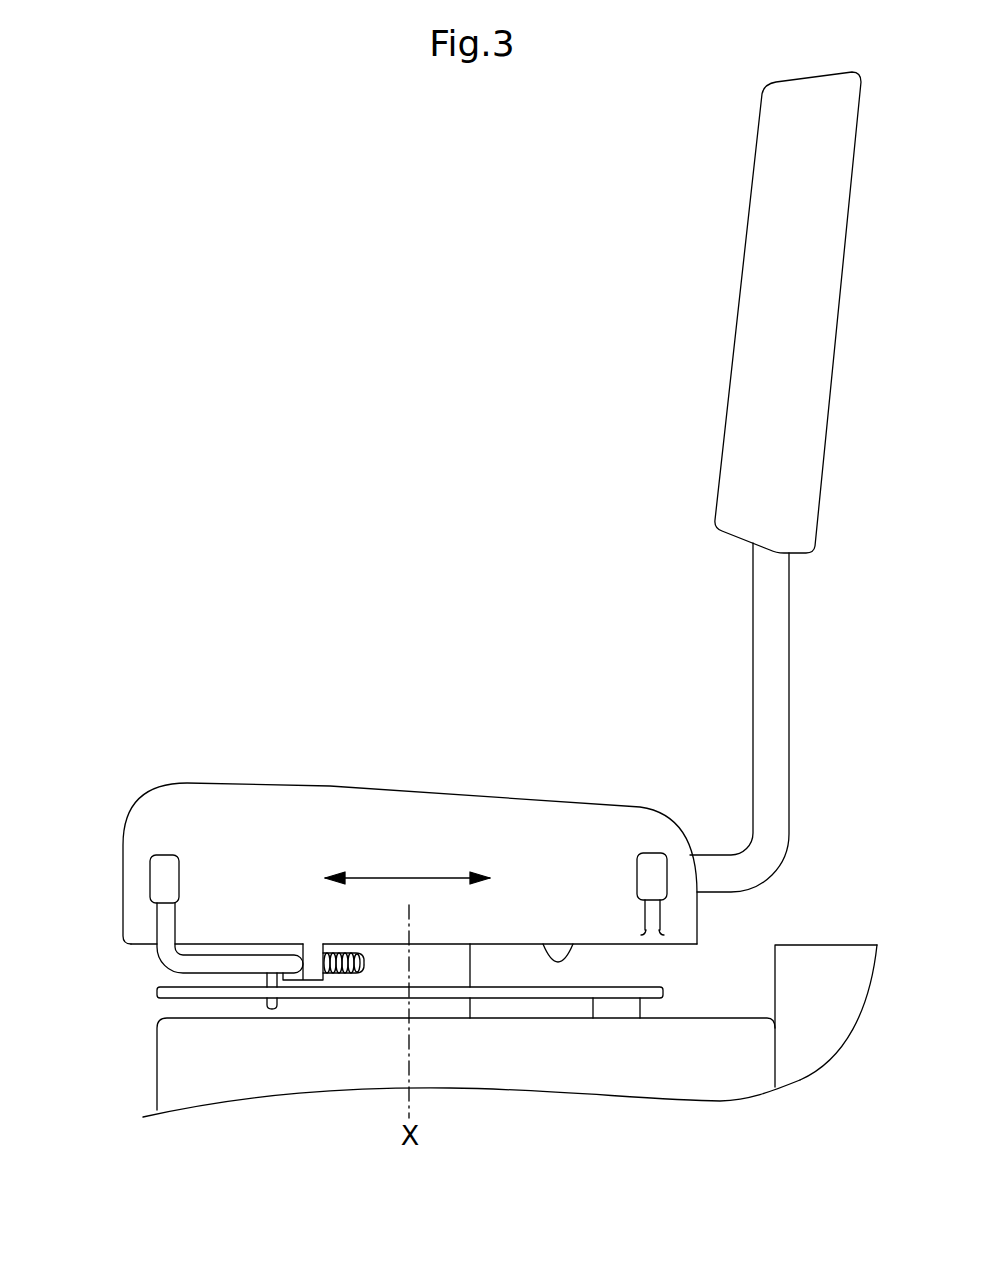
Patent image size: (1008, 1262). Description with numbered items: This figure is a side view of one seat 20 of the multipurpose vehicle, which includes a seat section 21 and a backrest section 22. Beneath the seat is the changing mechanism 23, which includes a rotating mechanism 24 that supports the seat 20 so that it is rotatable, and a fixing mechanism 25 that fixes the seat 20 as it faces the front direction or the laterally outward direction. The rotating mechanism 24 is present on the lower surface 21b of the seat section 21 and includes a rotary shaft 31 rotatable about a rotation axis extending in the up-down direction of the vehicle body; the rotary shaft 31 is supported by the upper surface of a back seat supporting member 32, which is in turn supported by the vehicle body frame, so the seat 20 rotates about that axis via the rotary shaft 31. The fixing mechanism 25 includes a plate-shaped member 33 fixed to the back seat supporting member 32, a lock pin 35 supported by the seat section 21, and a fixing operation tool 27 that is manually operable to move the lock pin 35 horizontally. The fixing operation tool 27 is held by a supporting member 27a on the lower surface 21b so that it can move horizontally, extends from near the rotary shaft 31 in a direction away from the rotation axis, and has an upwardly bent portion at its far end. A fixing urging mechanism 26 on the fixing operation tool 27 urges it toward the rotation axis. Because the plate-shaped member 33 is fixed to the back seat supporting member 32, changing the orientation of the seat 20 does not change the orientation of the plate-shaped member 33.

The seat 20 is at (492, 529).
The seat section 21 is at (363, 797).
The lower surface 21b is at (565, 952).
The backrest section 22 is at (730, 438).
The changing mechanism 23 is at (105, 1040).
The rotating mechanism 24 is at (642, 1058).
The fixing mechanism 25 is at (95, 803).
The fixing urging mechanism 26 is at (340, 975).
The fixing operation tool 27 is at (165, 855).
The supporting member 27a is at (313, 944).
The rotary shaft 31 is at (458, 1007).
The back seat supporting member 32 is at (692, 1003).
The plate-shaped member 33 is at (155, 992).
The lock pin 35 is at (271, 1010).